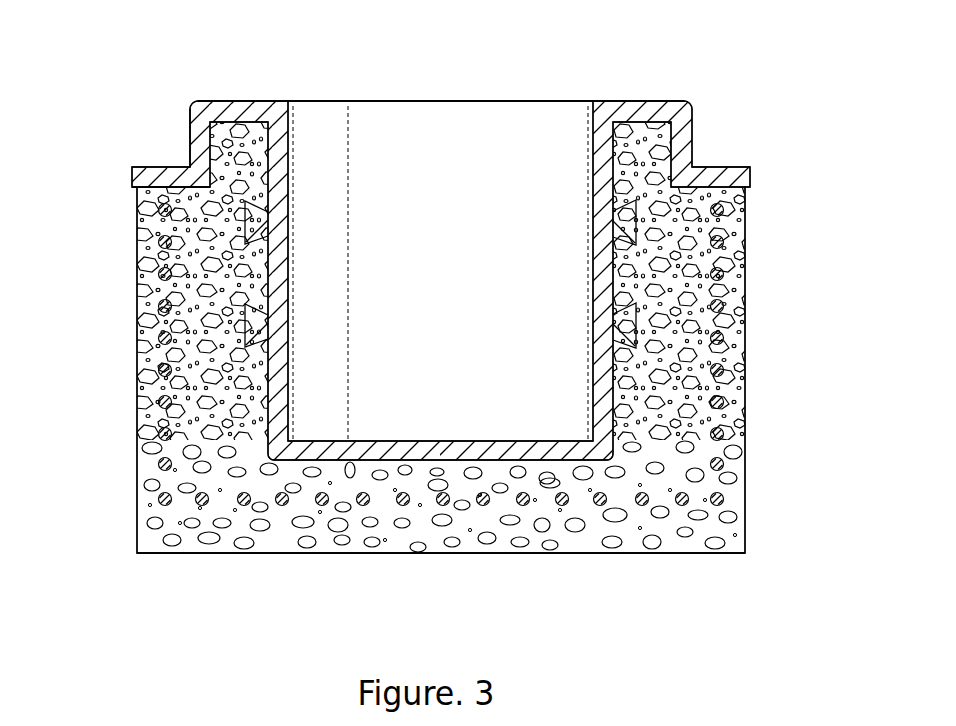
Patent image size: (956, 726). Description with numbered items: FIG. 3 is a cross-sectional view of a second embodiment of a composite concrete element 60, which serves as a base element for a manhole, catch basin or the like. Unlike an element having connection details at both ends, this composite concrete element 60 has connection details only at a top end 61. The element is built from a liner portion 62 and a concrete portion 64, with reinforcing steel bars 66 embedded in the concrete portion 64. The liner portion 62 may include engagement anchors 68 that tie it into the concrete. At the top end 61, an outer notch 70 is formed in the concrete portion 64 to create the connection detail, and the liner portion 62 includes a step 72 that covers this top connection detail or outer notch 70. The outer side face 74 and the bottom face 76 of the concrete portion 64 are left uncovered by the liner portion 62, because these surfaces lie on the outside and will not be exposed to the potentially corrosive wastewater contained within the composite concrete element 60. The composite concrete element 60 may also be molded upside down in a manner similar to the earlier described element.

The composite concrete element 60 is at (775, 156).
The top end 61 is at (420, 100).
The liner portion 62 is at (236, 101).
The concrete portion 64 is at (707, 333).
The reinforcing steel bars 66 is at (155, 300).
The engagement anchors 68 is at (243, 225).
The outer notch 70 is at (138, 192).
The step 72 is at (188, 140).
The outer side face 74 is at (137, 425).
The bottom face 76 is at (590, 553).